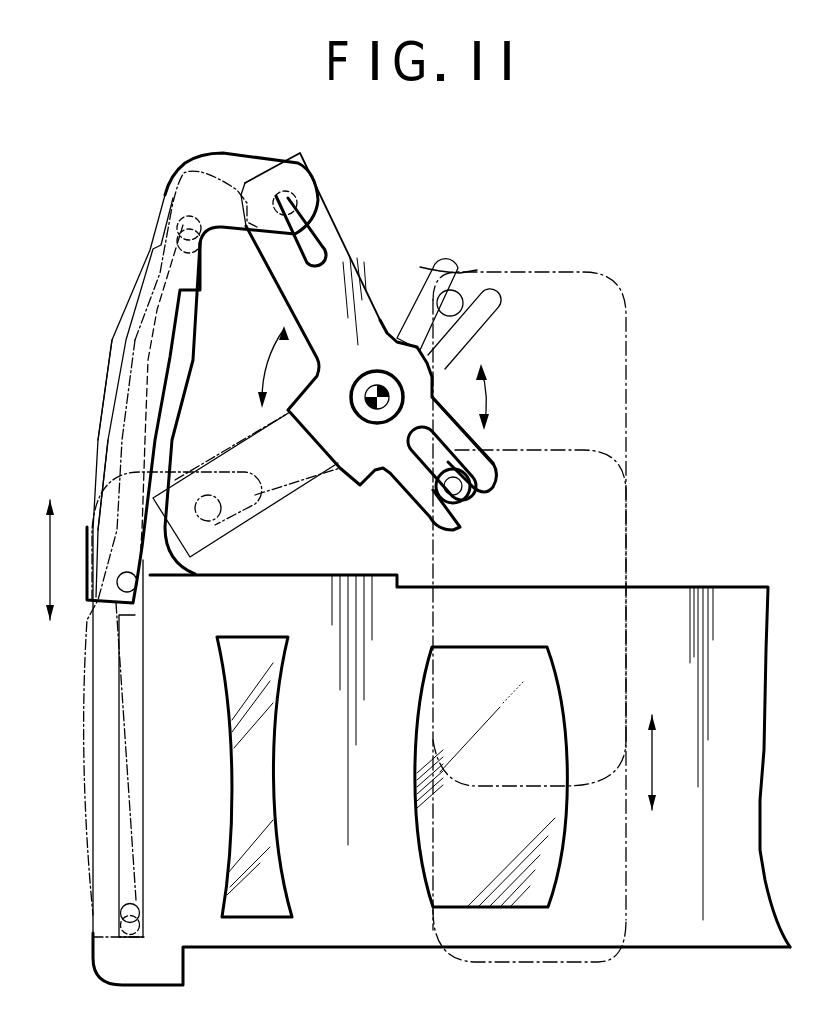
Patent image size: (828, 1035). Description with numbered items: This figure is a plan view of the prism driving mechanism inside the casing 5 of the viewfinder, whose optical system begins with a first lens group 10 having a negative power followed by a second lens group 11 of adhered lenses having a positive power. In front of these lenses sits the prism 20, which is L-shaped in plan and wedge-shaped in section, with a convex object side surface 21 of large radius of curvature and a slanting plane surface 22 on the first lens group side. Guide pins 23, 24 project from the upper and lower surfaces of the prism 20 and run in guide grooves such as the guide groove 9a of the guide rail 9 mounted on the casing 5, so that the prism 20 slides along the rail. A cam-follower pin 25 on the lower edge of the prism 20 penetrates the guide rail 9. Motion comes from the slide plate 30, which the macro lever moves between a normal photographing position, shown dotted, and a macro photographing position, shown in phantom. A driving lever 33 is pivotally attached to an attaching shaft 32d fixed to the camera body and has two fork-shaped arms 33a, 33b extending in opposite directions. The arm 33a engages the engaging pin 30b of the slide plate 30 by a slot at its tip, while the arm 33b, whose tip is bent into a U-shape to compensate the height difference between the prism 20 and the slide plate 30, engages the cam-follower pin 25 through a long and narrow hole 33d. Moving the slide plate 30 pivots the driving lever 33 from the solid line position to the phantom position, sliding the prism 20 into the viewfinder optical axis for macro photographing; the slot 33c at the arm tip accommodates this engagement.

The casing 5 is at (718, 603).
The guide rail 9 is at (133, 274).
The guide groove 9a is at (155, 306).
The first lens group 10 is at (262, 920).
The second lens group 11 is at (457, 907).
The prism 20 is at (110, 447).
The object side surface 21 is at (114, 373).
The surface of the first lens group side 22 is at (165, 398).
The guide pin 23 is at (183, 233).
The guide pin 24 is at (140, 585).
The cam-follower pin 25 is at (283, 190).
The slide plate 30 is at (607, 288).
The engaging pin 30b is at (462, 290).
The attaching shaft 32d is at (378, 371).
The driving lever 33 is at (348, 266).
The arm 33a is at (500, 480).
The arm 33b is at (324, 213).
The lever slot 33c is at (400, 467).
The long and narrow hole 33d is at (320, 247).